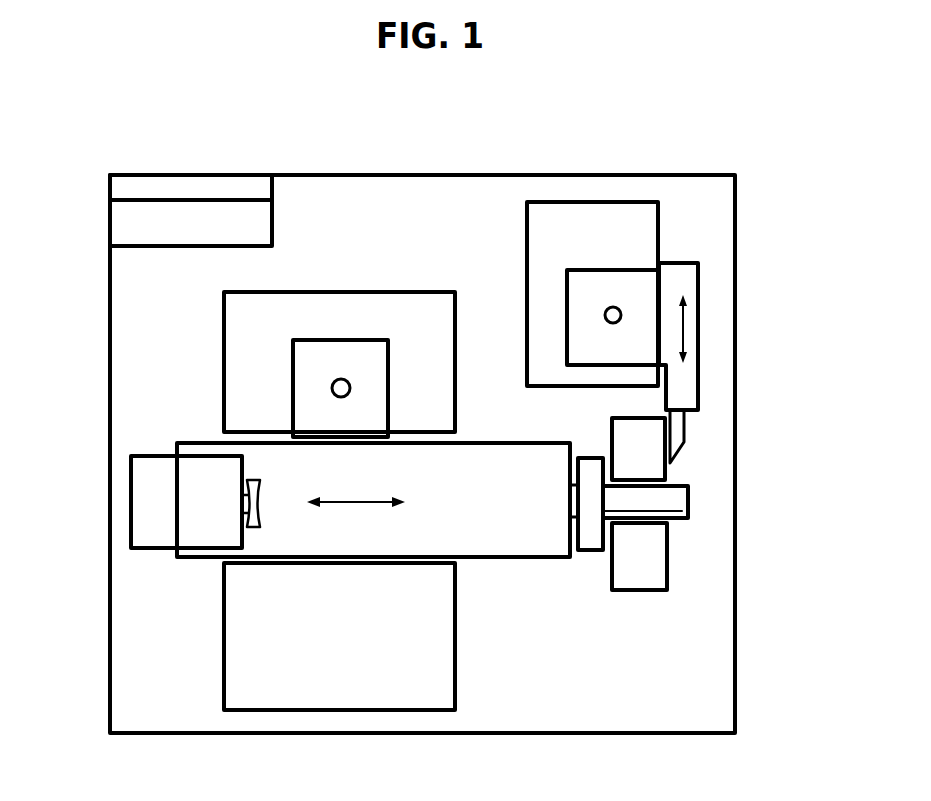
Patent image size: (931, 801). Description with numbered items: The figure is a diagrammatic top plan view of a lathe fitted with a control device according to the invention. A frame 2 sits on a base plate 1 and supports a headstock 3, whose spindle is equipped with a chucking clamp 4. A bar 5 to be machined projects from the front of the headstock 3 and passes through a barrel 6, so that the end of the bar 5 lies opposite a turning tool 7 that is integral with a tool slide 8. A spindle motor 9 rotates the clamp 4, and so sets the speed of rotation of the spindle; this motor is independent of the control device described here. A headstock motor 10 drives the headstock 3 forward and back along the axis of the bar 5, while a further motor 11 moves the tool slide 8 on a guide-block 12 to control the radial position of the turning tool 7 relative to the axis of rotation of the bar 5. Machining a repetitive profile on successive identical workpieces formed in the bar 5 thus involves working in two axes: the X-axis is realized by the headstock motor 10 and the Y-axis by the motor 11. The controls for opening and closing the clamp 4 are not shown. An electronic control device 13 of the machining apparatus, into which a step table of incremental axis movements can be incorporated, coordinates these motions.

The base plate 1 is at (647, 697).
The frame 2 is at (363, 648).
The headstock 3 is at (495, 503).
The chucking clamp 4 is at (590, 535).
The bar 5 is at (688, 502).
The barrel 6 is at (650, 562).
The turning tool 7 is at (674, 434).
The tool slide 8 is at (680, 286).
The spindle motor 9 is at (157, 498).
The headstock motor 10 is at (362, 362).
The motor 11 is at (590, 295).
The guide-block 12 is at (635, 228).
The electronic control device 13 is at (194, 192).